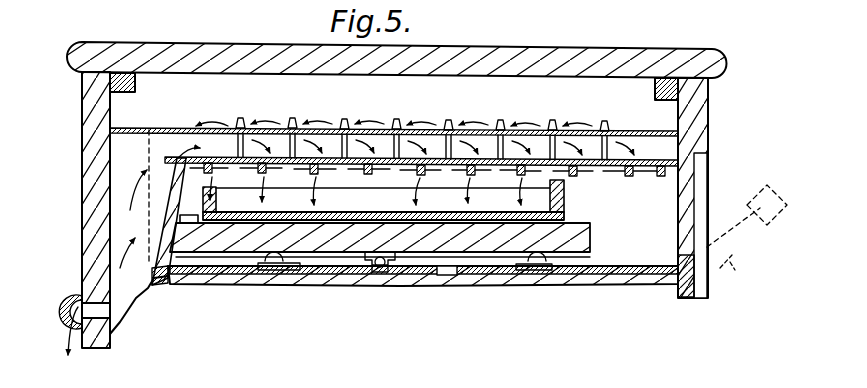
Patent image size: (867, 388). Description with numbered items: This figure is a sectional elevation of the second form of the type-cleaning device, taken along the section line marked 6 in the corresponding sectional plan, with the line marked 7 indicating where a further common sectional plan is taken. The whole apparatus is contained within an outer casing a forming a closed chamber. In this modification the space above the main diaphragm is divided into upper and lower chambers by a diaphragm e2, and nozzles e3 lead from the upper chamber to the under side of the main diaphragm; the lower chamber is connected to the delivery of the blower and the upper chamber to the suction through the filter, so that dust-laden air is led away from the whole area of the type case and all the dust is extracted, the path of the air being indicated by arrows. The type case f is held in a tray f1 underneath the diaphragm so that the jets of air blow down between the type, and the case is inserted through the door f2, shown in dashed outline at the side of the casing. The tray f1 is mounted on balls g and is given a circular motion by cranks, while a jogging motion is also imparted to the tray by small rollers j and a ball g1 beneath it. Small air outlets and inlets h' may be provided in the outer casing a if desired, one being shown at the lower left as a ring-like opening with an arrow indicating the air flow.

The guide rail / rod 6 is at (185, 101).
The shaft 7 is at (160, 190).
The outer casing a is at (97, 227).
The diaphragm e2 is at (445, 126).
The nozzles e3 is at (241, 126).
The type case f is at (566, 196).
The tray f1 is at (575, 238).
The door f2 is at (742, 262).
The balls g is at (273, 262).
The ball g1 is at (372, 270).
The small rollers j is at (447, 275).
The air outlets and inlets h' is at (56, 325).